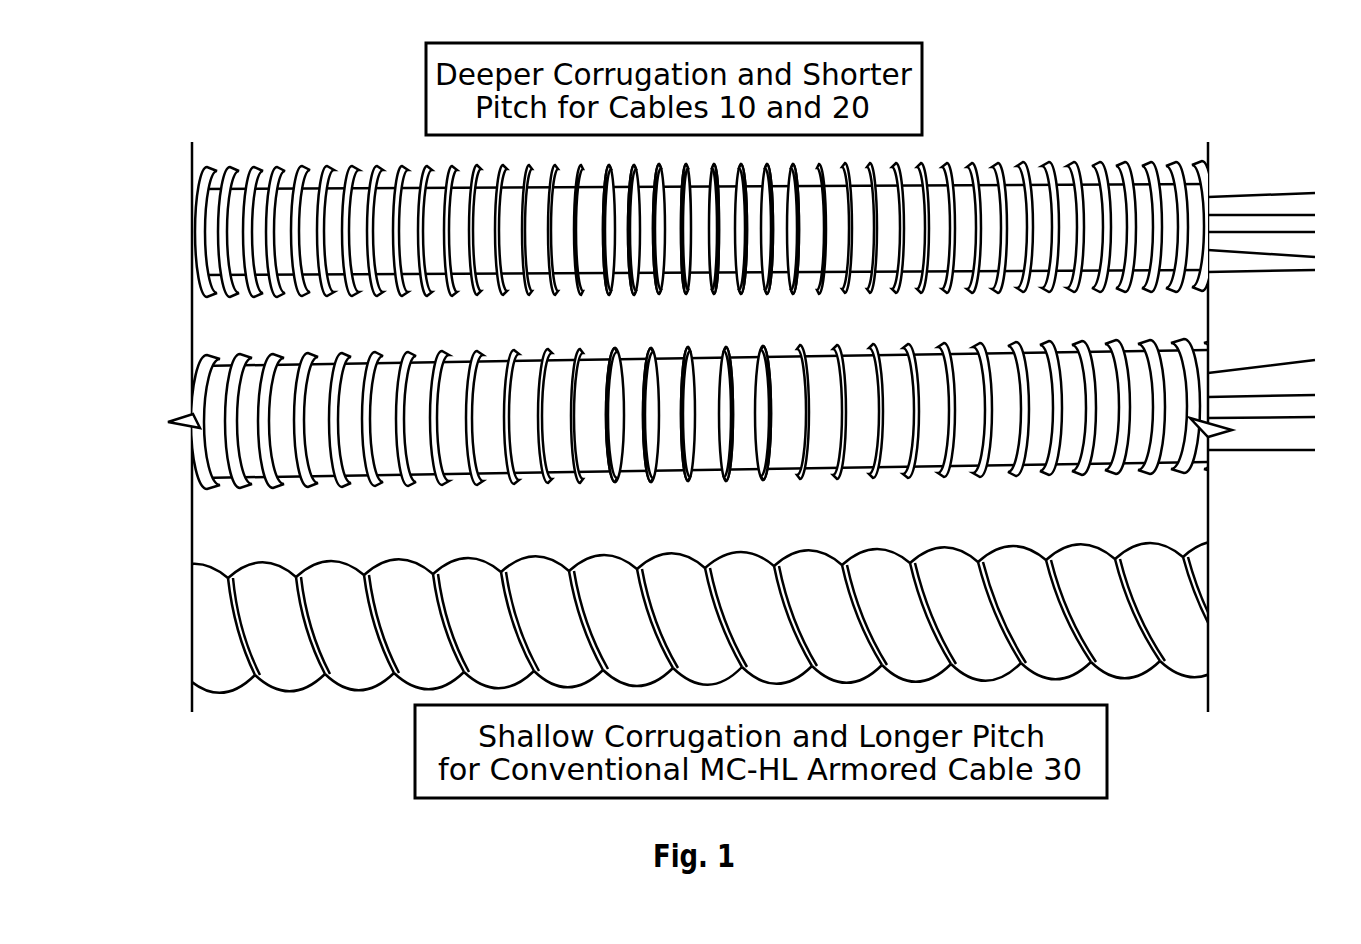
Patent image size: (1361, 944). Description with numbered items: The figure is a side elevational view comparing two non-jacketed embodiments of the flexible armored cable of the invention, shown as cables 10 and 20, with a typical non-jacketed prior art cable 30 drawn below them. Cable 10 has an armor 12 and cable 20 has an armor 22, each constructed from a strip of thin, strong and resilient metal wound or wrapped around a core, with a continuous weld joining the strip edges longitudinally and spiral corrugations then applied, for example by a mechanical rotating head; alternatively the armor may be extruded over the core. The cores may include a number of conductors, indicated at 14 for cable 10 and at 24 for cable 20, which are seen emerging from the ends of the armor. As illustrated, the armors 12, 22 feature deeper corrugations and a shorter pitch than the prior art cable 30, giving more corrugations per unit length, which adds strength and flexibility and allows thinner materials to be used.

The armored cable 10 is at (683, 196).
The armor 12 is at (1035, 160).
The conductors 14 is at (1266, 180).
The armored cable 20 is at (686, 395).
The armor 22 is at (937, 345).
The conductors 24 is at (1272, 468).
The prior art cable 30 is at (224, 546).